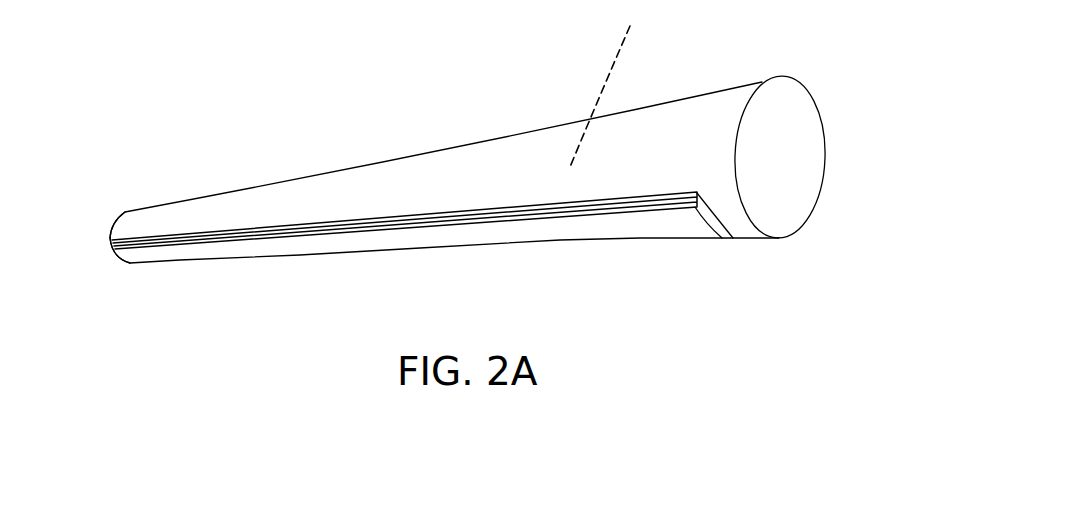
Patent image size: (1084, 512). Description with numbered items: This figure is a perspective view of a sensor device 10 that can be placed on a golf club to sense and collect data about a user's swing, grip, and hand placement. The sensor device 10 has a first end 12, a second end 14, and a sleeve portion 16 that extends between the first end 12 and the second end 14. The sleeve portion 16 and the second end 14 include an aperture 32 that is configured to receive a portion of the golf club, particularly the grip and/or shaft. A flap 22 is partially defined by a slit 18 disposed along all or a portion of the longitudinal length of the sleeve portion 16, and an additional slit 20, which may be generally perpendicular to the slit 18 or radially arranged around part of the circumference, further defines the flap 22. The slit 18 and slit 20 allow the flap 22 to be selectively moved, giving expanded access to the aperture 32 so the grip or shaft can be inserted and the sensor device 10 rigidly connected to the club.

The sensor device 10 is at (446, 135).
The first end 12 is at (790, 108).
The second end 14 is at (110, 238).
The sleeve portion 16 is at (326, 193).
The slit 18 is at (270, 232).
The additional slit 20 is at (704, 228).
The flap 22 is at (274, 258).
The aperture 32 is at (610, 83).